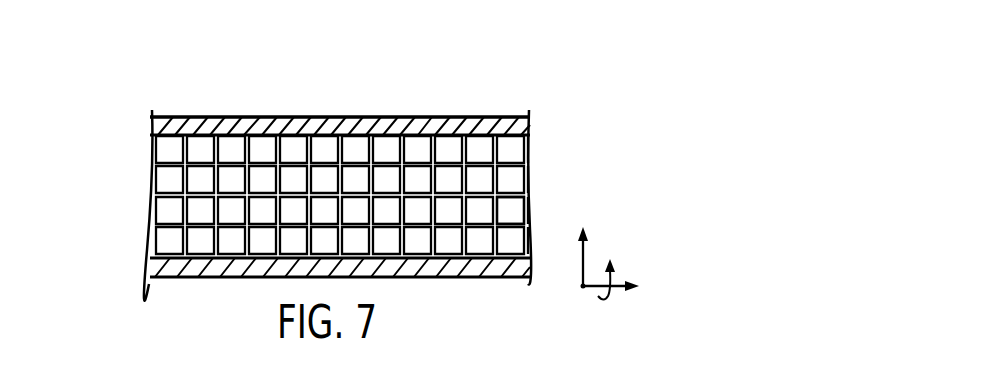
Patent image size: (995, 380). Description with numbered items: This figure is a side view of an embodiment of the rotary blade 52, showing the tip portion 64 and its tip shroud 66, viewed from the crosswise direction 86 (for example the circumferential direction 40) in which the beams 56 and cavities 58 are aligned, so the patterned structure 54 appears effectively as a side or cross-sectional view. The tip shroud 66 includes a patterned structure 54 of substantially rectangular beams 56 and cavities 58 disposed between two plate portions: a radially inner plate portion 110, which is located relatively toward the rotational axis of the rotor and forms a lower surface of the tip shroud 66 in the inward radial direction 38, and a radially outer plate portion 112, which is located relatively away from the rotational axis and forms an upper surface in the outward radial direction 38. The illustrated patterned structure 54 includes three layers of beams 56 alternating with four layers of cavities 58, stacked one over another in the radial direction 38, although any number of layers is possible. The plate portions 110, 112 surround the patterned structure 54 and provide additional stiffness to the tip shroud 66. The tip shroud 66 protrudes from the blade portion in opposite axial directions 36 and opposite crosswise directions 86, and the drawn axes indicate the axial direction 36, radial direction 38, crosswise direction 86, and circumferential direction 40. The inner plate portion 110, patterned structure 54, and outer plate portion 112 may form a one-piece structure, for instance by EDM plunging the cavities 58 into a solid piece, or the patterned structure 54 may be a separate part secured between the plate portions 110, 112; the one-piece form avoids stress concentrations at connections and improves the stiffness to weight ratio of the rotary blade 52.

The rotary blade 52 is at (556, 116).
The patterned structure 54 is at (346, 170).
The beams 56 is at (513, 228).
The cavities 58 is at (165, 242).
The tip portion 64 is at (167, 125).
The tip shroud 66 is at (167, 125).
The radially inner plate portion 110 is at (440, 280).
The radially outer plate portion 112 is at (432, 116).
The radial direction 38 is at (583, 260).
The axial direction 36 is at (618, 284).
The circumferential direction 40 is at (598, 297).
The crosswise direction 86 is at (582, 287).